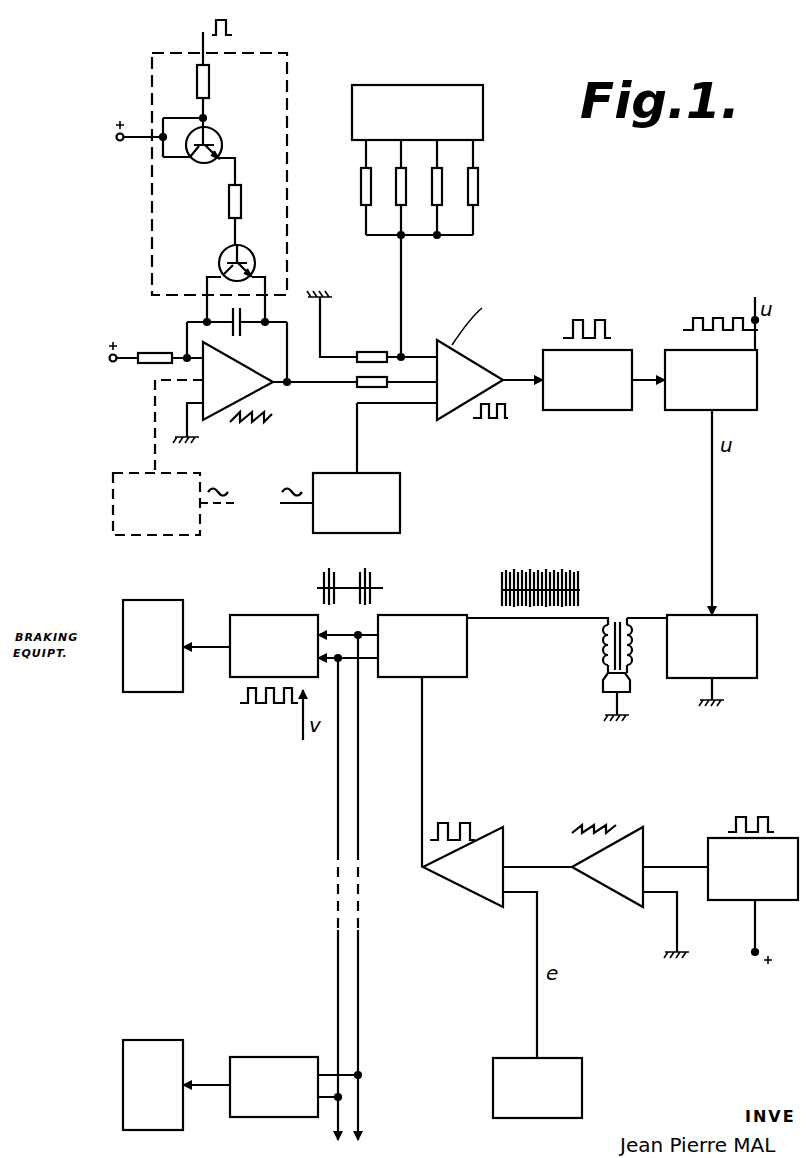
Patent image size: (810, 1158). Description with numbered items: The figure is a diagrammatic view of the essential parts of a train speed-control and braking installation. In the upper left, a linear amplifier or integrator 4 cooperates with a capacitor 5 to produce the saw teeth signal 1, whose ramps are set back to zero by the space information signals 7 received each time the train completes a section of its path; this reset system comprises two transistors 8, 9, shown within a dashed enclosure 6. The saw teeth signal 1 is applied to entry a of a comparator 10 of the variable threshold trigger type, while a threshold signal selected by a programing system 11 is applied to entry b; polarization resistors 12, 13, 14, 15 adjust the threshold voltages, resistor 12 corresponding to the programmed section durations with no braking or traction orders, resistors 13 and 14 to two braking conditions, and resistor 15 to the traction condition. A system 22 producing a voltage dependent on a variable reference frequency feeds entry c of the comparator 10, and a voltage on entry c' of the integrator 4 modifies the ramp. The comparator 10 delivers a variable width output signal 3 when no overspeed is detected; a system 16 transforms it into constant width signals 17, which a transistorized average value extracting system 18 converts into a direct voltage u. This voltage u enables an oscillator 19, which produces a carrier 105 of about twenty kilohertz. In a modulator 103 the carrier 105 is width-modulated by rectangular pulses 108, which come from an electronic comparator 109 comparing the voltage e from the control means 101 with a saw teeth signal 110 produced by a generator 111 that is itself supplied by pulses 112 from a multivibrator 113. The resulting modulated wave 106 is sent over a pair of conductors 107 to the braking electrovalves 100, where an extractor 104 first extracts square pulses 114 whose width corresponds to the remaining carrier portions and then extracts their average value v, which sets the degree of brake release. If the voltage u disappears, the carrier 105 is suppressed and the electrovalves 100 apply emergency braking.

The saw teeth signal 1 is at (251, 435).
The pulse signal output of comparator 3 is at (500, 401).
The linear amplifier or integrator 4 is at (238, 380).
The capacitor 5 is at (242, 314).
The switching circuit 6 is at (287, 95).
The space information signals 7 is at (227, 40).
The transistor 8 is at (224, 138).
The transistor 9 is at (221, 258).
The comparator 10 is at (478, 366).
The programing system 11 is at (475, 107).
The polarization resistor 12 is at (361, 190).
The polarization resistor 13 is at (398, 198).
The polarization resistor 14 is at (441, 198).
The polarization resistor 15 is at (478, 190).
The constant width system 16 is at (590, 410).
The constant width signals 17 is at (590, 320).
The average value extracting system 18 is at (680, 410).
The oscillator 19 is at (703, 630).
The frequency dependent voltage system 22 is at (313, 510).
The braking electrovalves 100 is at (165, 612).
The control means 101 is at (570, 1083).
The modulator 103 is at (427, 622).
The extractor 104 is at (270, 622).
The carrier 105 is at (578, 585).
The modulated wave 106 is at (360, 573).
The pair of conductors 107 is at (358, 825).
The rectangular pulses 108 is at (450, 815).
The electronic comparator 109 is at (466, 886).
The saw teeth signal 110 is at (600, 826).
The saw teeth generator 111 is at (600, 877).
The pulses 112 is at (757, 808).
The multivibrator 113 is at (730, 887).
The square pulses 114 is at (268, 715).